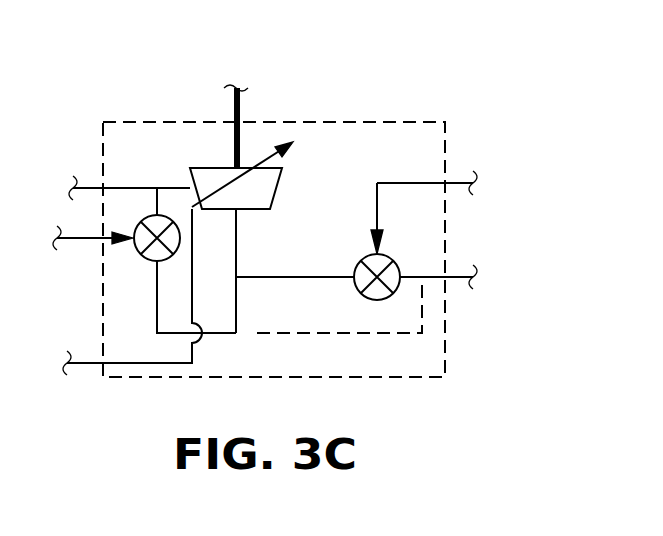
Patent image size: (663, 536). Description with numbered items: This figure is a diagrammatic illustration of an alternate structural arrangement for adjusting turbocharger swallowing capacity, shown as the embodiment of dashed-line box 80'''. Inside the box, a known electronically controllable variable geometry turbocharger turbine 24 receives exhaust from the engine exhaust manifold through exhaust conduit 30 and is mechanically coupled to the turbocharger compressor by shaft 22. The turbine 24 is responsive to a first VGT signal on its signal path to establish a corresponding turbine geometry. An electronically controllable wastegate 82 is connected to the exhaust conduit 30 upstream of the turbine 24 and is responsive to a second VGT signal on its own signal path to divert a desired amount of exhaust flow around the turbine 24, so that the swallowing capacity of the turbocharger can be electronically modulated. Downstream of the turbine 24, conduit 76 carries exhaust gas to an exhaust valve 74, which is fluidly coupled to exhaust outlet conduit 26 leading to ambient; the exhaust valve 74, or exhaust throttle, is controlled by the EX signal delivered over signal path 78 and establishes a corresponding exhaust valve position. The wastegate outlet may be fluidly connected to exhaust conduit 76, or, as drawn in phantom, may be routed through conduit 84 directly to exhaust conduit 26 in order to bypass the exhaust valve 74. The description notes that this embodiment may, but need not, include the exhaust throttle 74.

The shaft 22 is at (242, 109).
The turbocharger turbine 24 is at (277, 194).
The exhaust conduit 26 is at (458, 280).
The exhaust conduit 30 is at (78, 187).
The exhaust valve 74 is at (388, 252).
The conduit 76 is at (237, 242).
The signal path 78 is at (455, 186).
The dashed-line box 80''' is at (323, 240).
The wastegate 82 is at (148, 259).
The conduit 84 is at (388, 334).